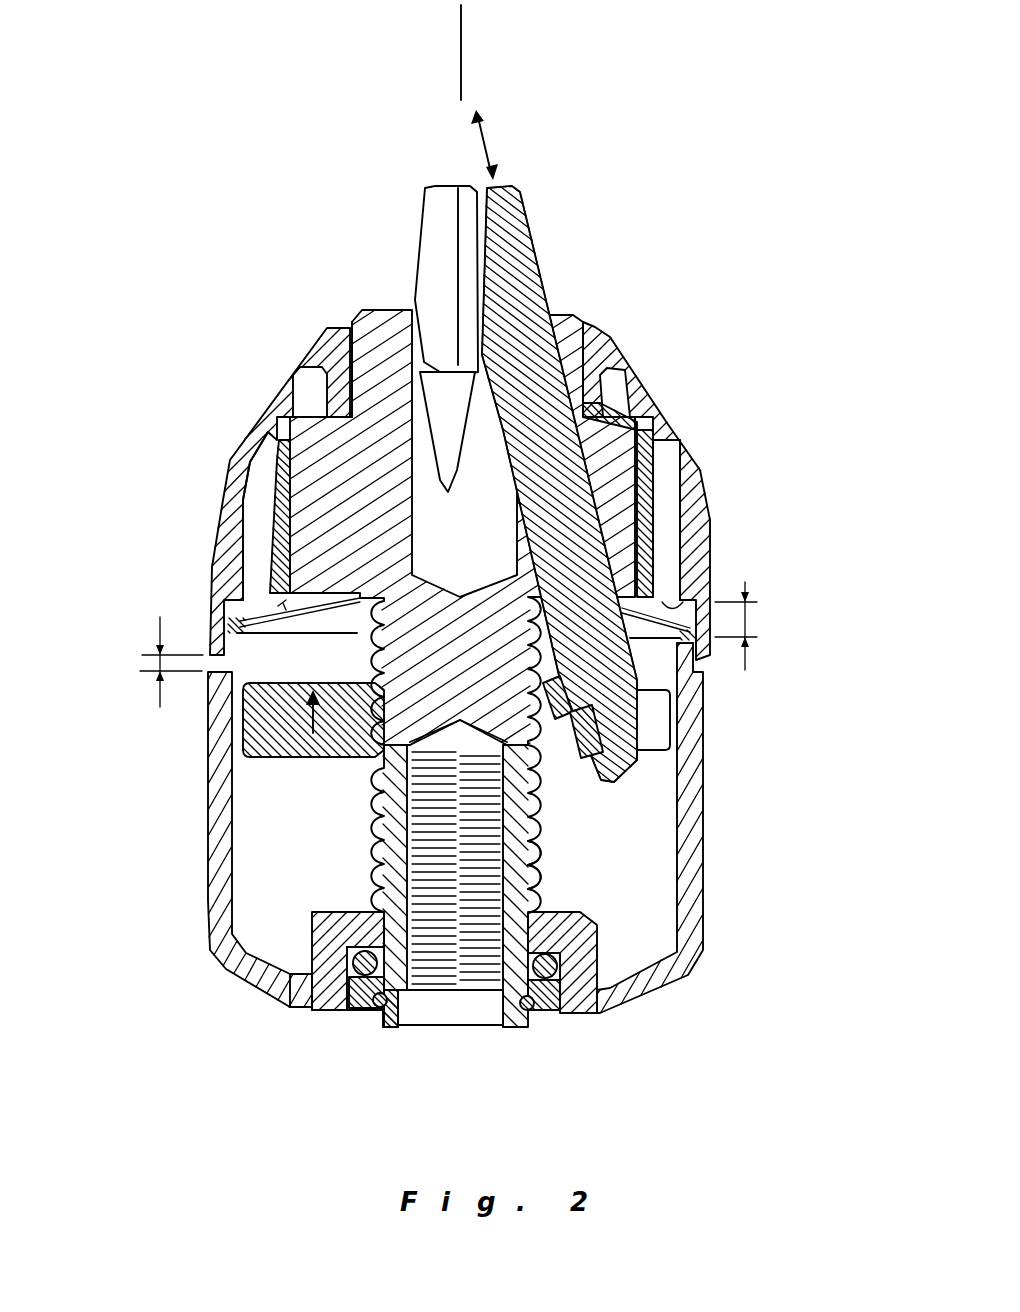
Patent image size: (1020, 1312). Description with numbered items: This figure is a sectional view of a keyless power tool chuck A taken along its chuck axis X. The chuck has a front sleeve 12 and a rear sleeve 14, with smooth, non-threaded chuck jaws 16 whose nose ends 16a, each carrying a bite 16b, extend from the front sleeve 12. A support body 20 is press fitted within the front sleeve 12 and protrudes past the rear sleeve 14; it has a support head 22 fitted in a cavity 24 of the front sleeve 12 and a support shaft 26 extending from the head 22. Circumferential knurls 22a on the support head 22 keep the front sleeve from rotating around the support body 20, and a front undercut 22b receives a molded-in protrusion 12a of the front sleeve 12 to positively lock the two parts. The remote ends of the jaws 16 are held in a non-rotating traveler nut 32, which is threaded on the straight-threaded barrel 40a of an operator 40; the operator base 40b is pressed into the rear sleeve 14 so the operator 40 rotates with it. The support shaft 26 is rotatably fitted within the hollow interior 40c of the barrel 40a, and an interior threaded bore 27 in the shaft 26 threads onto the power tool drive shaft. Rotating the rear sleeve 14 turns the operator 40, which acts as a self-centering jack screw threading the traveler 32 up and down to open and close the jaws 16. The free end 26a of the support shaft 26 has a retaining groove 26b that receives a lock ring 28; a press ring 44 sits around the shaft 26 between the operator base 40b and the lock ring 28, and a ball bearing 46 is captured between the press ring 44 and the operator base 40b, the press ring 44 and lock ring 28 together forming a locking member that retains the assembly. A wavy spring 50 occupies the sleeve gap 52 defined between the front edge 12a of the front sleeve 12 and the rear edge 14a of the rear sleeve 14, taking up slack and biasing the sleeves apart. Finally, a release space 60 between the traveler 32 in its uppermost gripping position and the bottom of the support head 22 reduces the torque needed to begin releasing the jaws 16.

The front sleeve 12 is at (267, 403).
The molded-in protrusion 12a is at (590, 418).
The rear sleeve 14 is at (657, 988).
The rear edge 14a is at (695, 612).
The chuck jaws 16 is at (527, 290).
The nose end 16a is at (452, 244).
The bite 16b is at (637, 730).
The support body 20 is at (368, 298).
The support head 22 is at (300, 477).
The circumferential knurls 22a is at (272, 547).
The front undercut 22b is at (590, 410).
The cavity 24 is at (647, 510).
The support shaft 26 is at (515, 785).
The free end 26a is at (387, 1002).
The retaining groove 26b is at (400, 1024).
The threaded bore 27 is at (452, 952).
The lock ring 28 is at (530, 1010).
The traveler nut 32 is at (277, 766).
The operator 40 is at (517, 787).
The threaded barrel 40a is at (552, 867).
The operator base 40b is at (320, 918).
The hollow interior 40c is at (332, 1008).
The press ring 44 is at (552, 1012).
The ball bearing 46 is at (563, 968).
The wavy spring 50 is at (217, 612).
The sleeve gap 52 is at (752, 623).
The release space 60 is at (217, 590).
The power tool chuck A is at (662, 378).
The chuck axis X is at (468, 52).